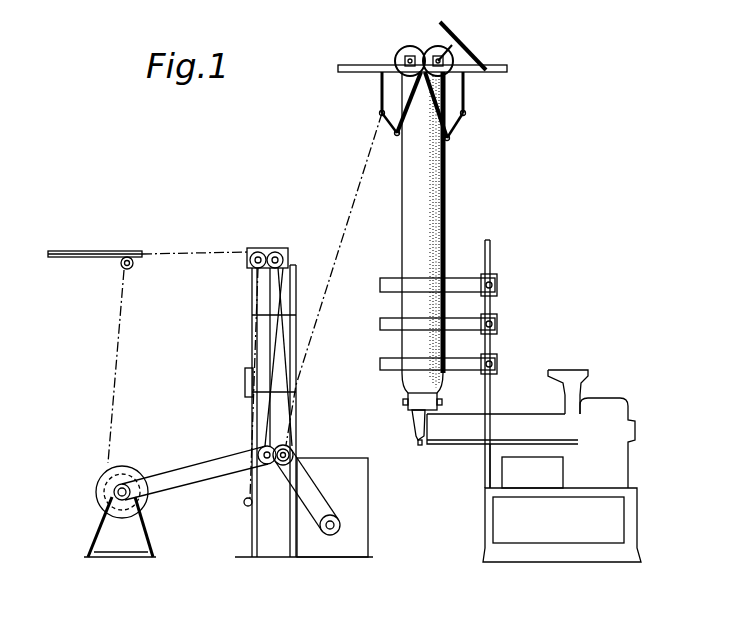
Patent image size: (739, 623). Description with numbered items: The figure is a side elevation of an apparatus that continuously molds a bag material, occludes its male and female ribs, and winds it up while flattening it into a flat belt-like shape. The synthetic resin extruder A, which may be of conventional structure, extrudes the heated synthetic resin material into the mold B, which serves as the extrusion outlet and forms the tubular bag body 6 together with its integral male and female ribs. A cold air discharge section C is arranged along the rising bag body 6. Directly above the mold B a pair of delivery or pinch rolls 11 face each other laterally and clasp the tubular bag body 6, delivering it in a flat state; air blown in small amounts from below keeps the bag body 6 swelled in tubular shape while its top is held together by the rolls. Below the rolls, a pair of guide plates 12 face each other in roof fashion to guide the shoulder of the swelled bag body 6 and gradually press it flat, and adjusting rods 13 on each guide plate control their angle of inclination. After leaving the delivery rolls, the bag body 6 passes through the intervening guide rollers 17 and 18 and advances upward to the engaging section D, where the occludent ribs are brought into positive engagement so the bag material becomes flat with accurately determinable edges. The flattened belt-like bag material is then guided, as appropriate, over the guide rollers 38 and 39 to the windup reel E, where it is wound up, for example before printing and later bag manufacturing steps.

The delivery or pinch rolls 11 is at (436, 48).
The guide plates 12 is at (382, 98).
The adjusting rods 13 is at (397, 136).
The bag body 6 is at (446, 192).
The cold air discharge section C is at (382, 324).
The mold B is at (410, 400).
The synthetic resin extruder A is at (607, 406).
The engaging section D is at (245, 380).
The windup reel E is at (120, 500).
The guide rollers 17 is at (258, 450).
The guide roller 18 is at (244, 503).
The guide rollers 38 is at (275, 252).
The guide roller 39 is at (147, 357).